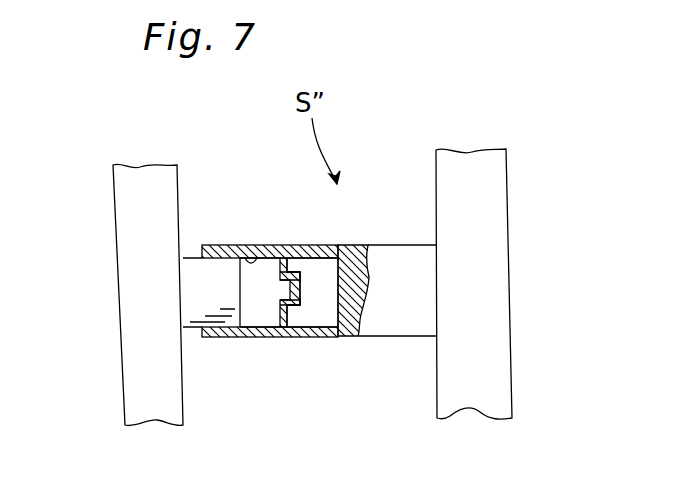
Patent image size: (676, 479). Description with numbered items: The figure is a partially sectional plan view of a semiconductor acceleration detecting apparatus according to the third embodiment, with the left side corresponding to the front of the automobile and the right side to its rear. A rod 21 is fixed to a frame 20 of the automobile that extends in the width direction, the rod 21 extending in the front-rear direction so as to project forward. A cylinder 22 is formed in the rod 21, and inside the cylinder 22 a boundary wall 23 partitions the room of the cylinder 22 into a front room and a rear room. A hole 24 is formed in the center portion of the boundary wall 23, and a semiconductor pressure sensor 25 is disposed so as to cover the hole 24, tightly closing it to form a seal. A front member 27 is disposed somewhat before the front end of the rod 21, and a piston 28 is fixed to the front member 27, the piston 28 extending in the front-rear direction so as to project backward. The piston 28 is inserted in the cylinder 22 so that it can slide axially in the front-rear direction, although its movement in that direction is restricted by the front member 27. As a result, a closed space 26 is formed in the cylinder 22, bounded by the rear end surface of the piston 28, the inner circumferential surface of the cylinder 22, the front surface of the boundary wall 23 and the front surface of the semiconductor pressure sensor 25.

The frame 20 is at (503, 188).
The rod 21 is at (390, 243).
The cylinder 22 is at (258, 290).
The boundary wall 23 is at (282, 312).
The hole 24 is at (280, 302).
The semiconductor pressure sensor 25 is at (303, 290).
The closed space 26 is at (263, 263).
The front member 27 is at (113, 222).
The piston 28 is at (205, 288).